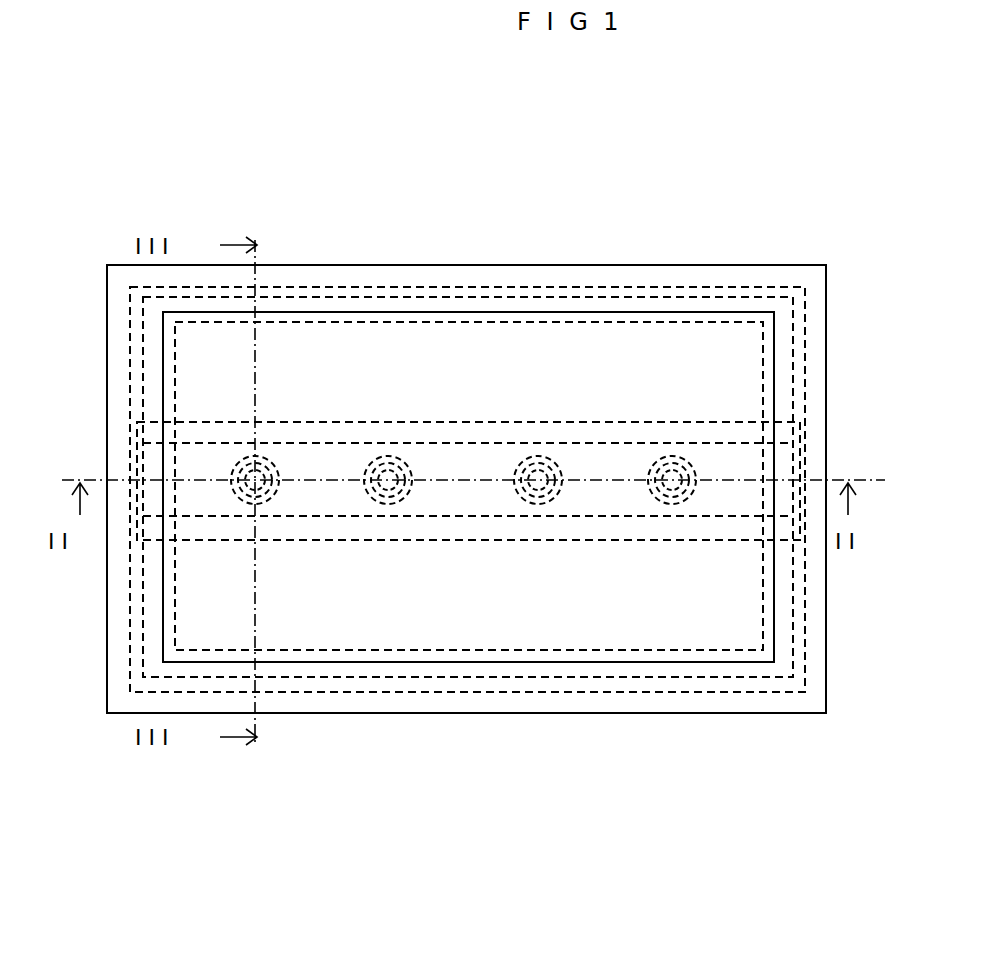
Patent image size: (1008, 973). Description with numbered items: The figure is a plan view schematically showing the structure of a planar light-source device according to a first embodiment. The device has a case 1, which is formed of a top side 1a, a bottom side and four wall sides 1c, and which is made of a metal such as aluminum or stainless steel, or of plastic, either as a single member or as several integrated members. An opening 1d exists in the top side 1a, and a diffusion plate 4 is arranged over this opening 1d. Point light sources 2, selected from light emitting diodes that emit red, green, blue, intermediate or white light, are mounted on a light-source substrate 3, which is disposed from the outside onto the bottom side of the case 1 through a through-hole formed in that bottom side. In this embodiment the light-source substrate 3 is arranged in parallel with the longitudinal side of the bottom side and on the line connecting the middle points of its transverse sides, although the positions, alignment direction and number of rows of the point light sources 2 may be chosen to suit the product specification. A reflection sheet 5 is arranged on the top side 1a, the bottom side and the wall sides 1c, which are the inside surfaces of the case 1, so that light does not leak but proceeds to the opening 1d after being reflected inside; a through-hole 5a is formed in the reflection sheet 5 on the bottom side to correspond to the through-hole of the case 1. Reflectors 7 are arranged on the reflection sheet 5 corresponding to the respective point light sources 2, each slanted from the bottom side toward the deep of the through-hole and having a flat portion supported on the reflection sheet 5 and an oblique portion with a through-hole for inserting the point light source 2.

The case 1 is at (347, 290).
The top side 1a is at (512, 682).
The wall sides 1c is at (393, 287).
The opening 1d is at (493, 340).
The point light sources 2 is at (388, 480).
The light-source substrate 3 is at (623, 465).
The diffusion plate 4 is at (563, 588).
The reflection sheet 5 is at (682, 675).
The through-hole 5a is at (685, 498).
The reflectors 7 is at (317, 527).